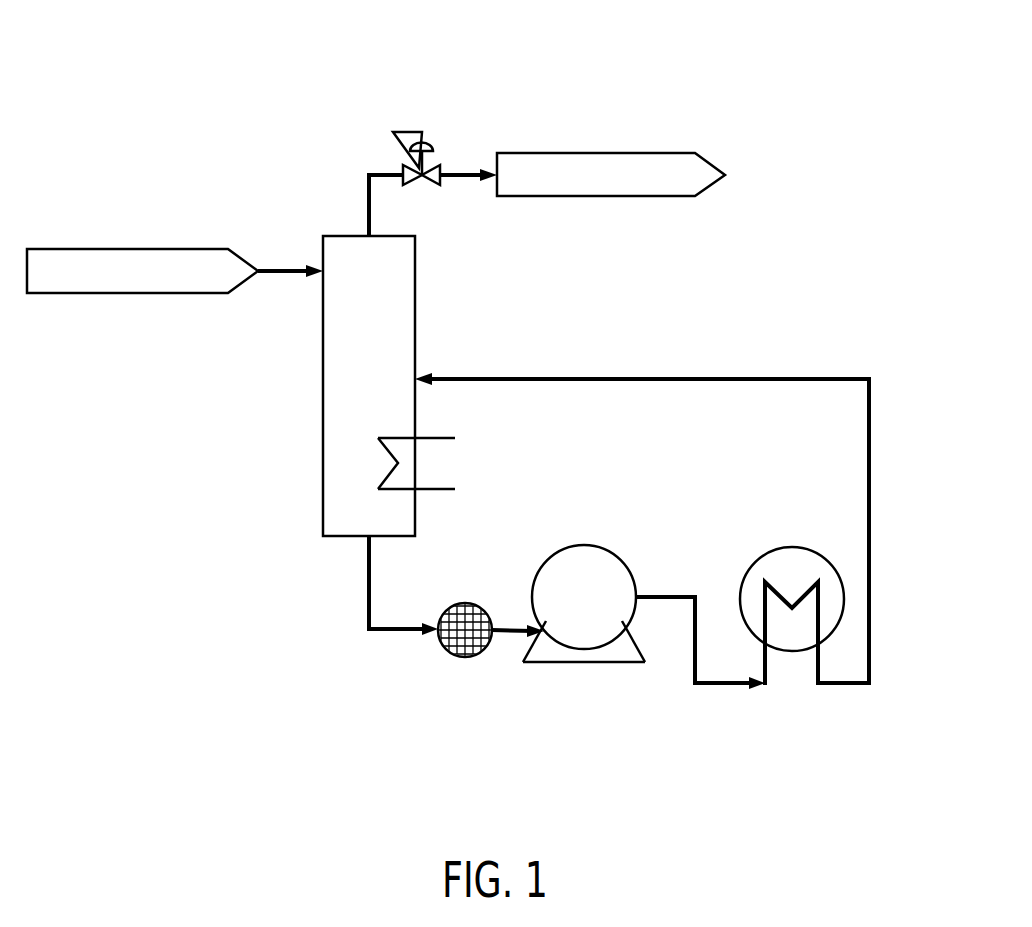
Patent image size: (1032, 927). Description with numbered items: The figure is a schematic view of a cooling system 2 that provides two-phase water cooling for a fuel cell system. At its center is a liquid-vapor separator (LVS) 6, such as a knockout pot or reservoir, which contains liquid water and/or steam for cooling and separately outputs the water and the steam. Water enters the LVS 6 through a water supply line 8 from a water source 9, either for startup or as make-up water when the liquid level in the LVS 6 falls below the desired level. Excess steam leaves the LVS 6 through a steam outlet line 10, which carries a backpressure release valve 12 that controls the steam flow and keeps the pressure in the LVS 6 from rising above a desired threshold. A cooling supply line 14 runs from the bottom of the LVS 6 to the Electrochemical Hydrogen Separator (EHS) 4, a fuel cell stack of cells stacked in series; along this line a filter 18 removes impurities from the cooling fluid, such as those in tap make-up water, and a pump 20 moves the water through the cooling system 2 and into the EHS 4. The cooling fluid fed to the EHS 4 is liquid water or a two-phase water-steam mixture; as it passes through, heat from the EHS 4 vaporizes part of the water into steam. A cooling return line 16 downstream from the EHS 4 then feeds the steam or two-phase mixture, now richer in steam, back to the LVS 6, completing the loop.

The cooling system 2 is at (256, 68).
The Electrochemical Hydrogen Separator (EHS) 4 is at (792, 547).
The liquid-vapor separator (LVS) 6 is at (415, 308).
The water supply line 8 is at (278, 271).
The water source 9 is at (128, 249).
The steam outlet line 10 is at (460, 175).
The backpressure release valve 12 is at (407, 132).
The cooling supply line 14 is at (368, 585).
The cooling return line 16 is at (869, 422).
The filter 18 is at (467, 603).
The pump 20 is at (585, 545).